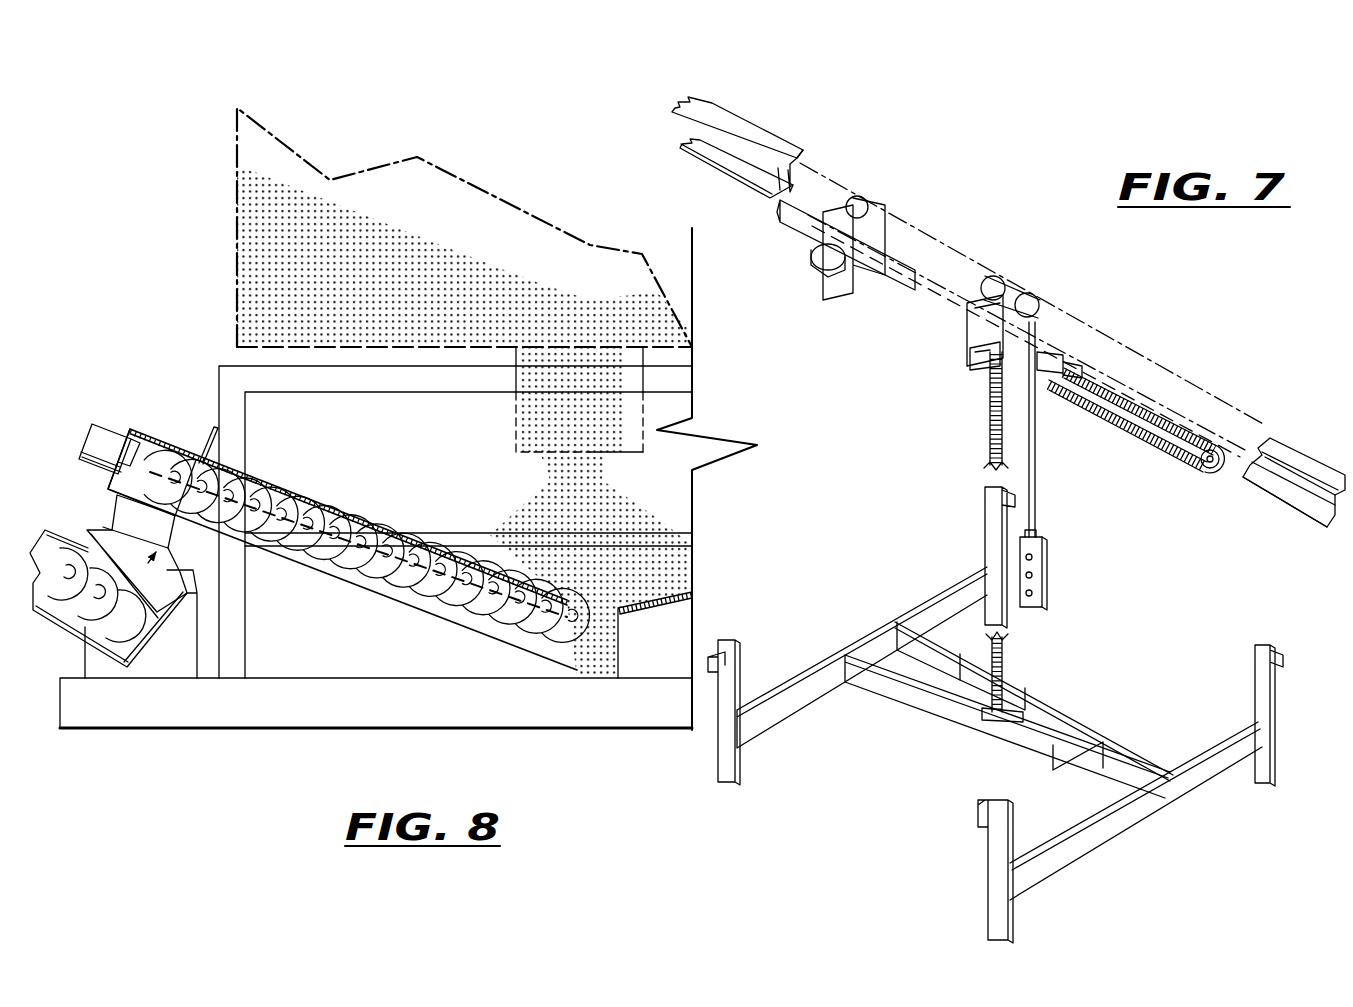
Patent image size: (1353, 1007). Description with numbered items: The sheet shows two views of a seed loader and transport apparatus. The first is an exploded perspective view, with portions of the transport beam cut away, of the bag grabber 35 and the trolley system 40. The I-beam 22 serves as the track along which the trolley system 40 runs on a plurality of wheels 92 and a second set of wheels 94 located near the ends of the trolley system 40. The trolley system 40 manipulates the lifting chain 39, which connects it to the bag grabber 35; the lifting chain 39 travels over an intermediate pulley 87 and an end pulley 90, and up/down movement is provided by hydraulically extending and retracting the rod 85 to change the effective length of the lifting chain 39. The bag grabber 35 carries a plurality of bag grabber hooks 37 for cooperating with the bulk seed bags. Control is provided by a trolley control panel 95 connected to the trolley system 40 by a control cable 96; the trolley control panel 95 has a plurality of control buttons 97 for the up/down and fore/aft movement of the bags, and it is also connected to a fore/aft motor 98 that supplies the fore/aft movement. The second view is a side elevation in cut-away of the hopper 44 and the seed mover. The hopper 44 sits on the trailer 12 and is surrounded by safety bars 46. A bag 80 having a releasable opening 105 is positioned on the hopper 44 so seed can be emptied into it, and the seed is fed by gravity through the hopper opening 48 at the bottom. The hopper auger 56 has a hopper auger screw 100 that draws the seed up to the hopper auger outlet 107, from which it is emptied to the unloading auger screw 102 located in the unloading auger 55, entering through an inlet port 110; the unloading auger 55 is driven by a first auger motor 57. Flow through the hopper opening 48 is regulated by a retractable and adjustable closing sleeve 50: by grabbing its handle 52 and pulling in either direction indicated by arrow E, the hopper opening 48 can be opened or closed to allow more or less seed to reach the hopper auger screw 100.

In FIG. 8, the trailer 12 is at (583, 712).
In FIG. 7, the I-beam 22 is at (760, 148).
In FIG. 7, the bag grabber 35 is at (898, 730).
In FIG. 7, the bag grabber hooks 37 is at (978, 813).
In FIG. 7, the lifting chain 39 is at (988, 430).
In FIG. 7, the trolley system 40 is at (1000, 190).
In FIG. 8, the hopper 44 is at (662, 592).
In FIG. 8, the safety bars 46 is at (248, 373).
In FIG. 8, the hopper opening 48 is at (606, 603).
In FIG. 8, the closing sleeve 50 is at (207, 445).
In FIG. 8, the handle 52 is at (213, 440).
In FIG. 8, the unloading auger 55 is at (103, 655).
In FIG. 8, the hopper auger 56 is at (445, 625).
In FIG. 8, the first auger motor 57 is at (75, 430).
In FIG. 8, the bag 80 is at (237, 213).
In FIG. 7, the rod 85 is at (1157, 442).
In FIG. 7, the intermediate pulley 87 is at (985, 360).
In FIG. 7, the end pulley 90 is at (1208, 470).
In FIG. 7, the wheels 92 is at (1033, 292).
In FIG. 7, the second set of wheels 94 is at (868, 200).
In FIG. 7, the trolley control panel 95 is at (1030, 612).
In FIG. 7, the control cable 96 is at (1034, 450).
In FIG. 7, the control buttons 97 is at (1032, 595).
In FIG. 7, the fore/aft motor 98 is at (820, 262).
In FIG. 8, the hopper auger screw 100 is at (393, 595).
In FIG. 8, the unloading auger screw 102 is at (73, 580).
In FIG. 8, the releasable opening 105 is at (516, 415).
In FIG. 8, the hopper auger outlet 107 is at (197, 597).
In FIG. 8, the inlet port 110 is at (103, 526).